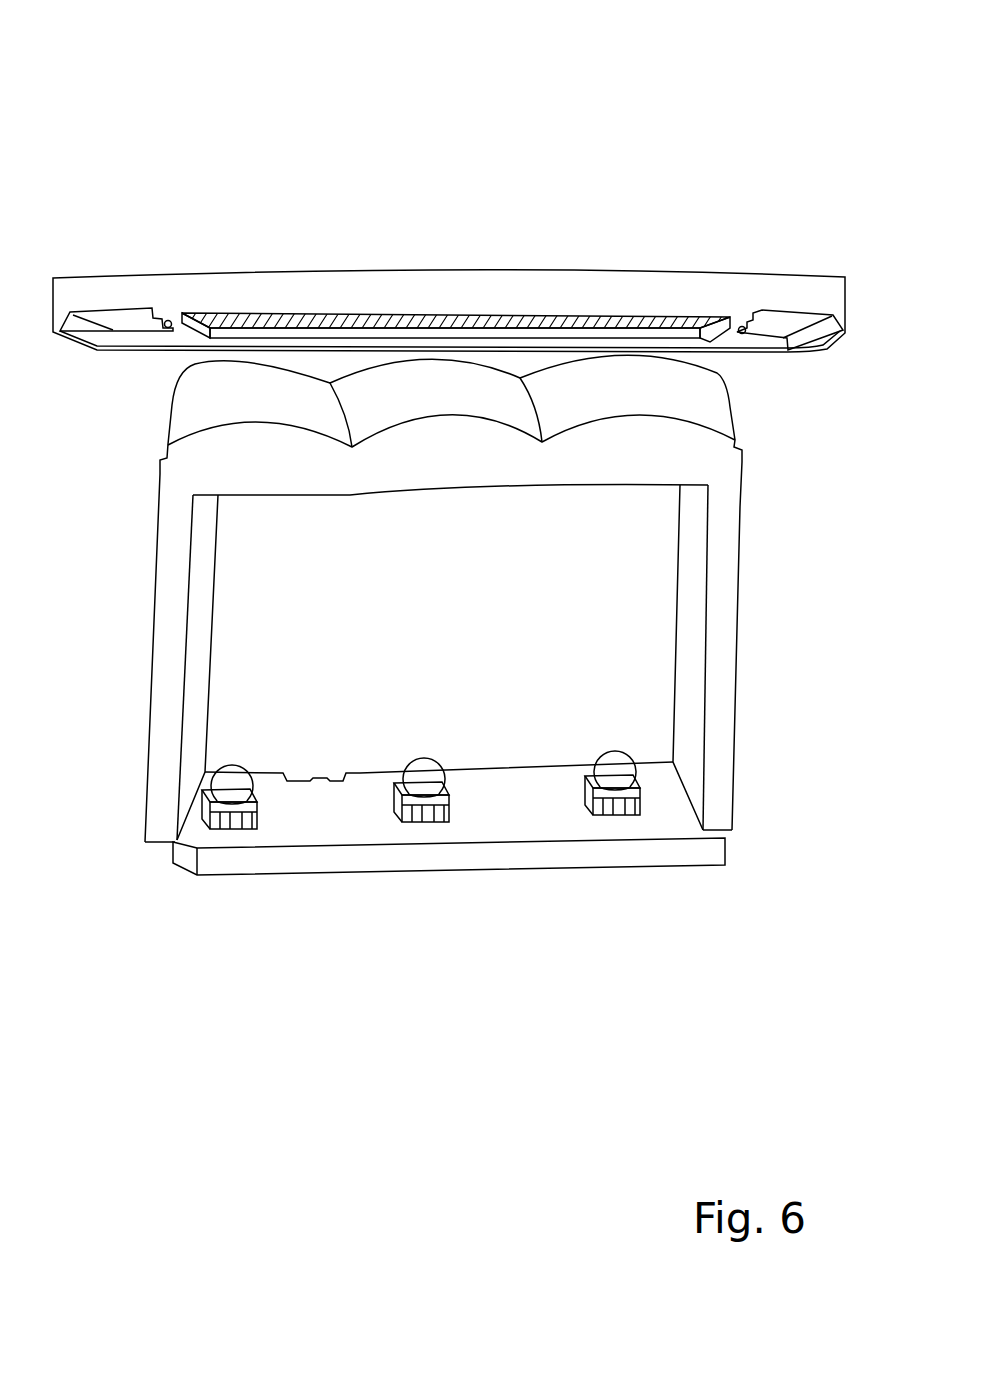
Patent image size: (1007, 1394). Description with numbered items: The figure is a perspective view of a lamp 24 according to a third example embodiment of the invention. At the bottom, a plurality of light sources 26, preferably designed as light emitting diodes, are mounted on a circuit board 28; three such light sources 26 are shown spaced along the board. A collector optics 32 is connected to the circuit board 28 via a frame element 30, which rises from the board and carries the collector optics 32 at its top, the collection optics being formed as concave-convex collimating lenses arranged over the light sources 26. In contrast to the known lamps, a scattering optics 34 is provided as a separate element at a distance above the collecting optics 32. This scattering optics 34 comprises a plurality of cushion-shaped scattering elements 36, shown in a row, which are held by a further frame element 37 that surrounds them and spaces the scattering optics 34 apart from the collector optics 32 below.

The lamp 24 is at (667, 98).
The light sources 26 is at (233, 777).
The circuit board 28 is at (473, 858).
The frame element 30 is at (710, 620).
The collector optics 32 is at (458, 460).
The scattering optics 34 is at (493, 307).
The cushion-shaped scattering elements 36 is at (292, 312).
The further frame element 37 is at (763, 287).